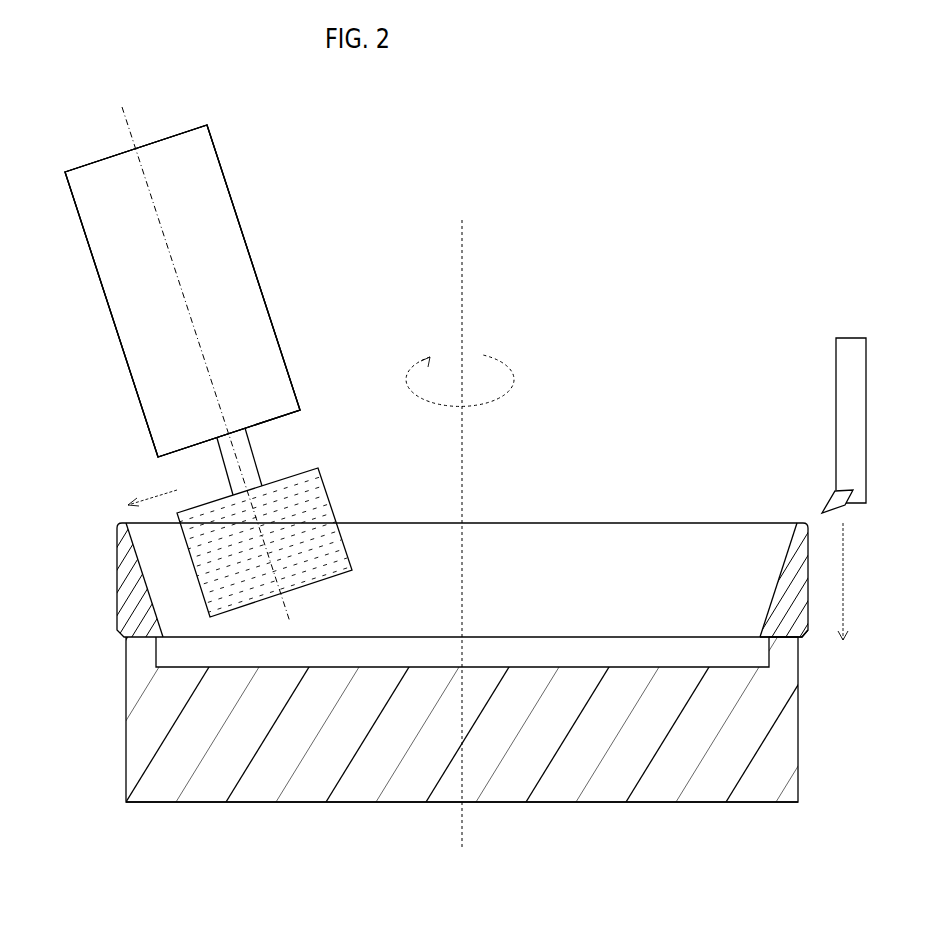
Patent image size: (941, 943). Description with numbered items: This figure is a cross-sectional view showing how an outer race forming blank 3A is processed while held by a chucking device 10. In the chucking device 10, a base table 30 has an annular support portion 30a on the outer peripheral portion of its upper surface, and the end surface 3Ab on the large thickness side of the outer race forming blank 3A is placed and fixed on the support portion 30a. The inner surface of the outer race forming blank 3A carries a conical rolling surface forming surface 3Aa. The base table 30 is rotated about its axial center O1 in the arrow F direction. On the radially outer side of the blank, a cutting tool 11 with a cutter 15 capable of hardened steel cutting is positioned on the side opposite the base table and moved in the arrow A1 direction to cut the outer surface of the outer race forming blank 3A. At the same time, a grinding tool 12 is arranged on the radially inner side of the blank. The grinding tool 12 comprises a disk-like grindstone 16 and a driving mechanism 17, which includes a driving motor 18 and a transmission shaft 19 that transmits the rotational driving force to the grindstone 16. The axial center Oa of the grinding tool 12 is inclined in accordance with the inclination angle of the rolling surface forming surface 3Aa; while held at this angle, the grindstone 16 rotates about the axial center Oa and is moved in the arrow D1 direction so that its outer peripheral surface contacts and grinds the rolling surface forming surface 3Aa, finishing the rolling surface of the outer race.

The grinding tool 12 is at (236, 199).
The driving mechanism 17 is at (235, 267).
The driving motor 18 is at (264, 341).
The transmission shaft 19 is at (267, 461).
The grindstone 16 is at (318, 492).
The axial center of the grinding tool Oa is at (166, 364).
The axial center of the base table O1 is at (432, 533).
The arrow F direction F is at (460, 366).
The arrow D1 direction D1 is at (152, 490).
The outer race forming blank 3A is at (614, 521).
The rolling surface forming surface 3Aa is at (781, 570).
The end surface 3Ab is at (778, 645).
The cutting tool 11 is at (869, 402).
The cutter 15 is at (845, 507).
The arrow A1 direction A1 is at (859, 581).
The chucking device 10 is at (310, 804).
The base table 30 is at (597, 804).
The support portion 30a is at (790, 654).